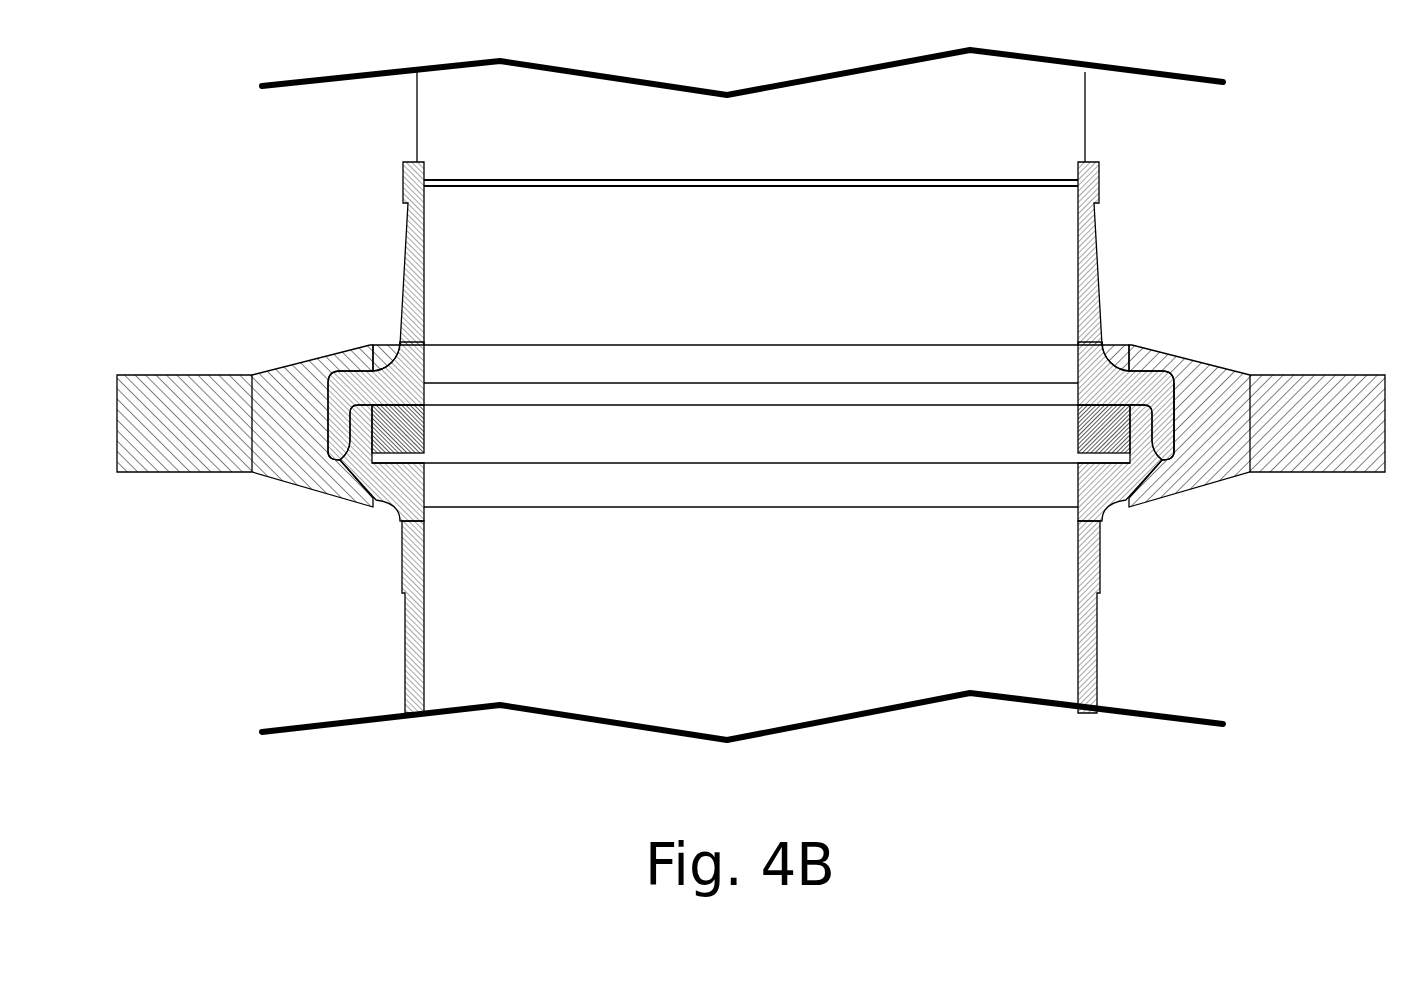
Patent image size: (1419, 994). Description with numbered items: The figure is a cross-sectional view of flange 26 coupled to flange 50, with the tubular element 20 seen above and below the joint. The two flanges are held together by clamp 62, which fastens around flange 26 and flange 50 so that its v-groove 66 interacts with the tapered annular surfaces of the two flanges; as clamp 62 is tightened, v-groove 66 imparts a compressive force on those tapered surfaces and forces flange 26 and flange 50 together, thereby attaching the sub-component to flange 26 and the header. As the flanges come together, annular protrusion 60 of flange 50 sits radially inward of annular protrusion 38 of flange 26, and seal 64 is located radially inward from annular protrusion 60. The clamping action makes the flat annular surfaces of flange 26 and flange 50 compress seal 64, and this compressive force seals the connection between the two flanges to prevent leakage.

The outer pipe 20 is at (1087, 127).
The flange 26 is at (799, 311).
The annular protrusion 38 is at (1172, 425).
The flange 50 is at (761, 559).
The annular protrusion 60 is at (1145, 435).
The clamp 62 is at (751, 468).
The seal 64 is at (1120, 435).
The v-groove 66 is at (1180, 420).